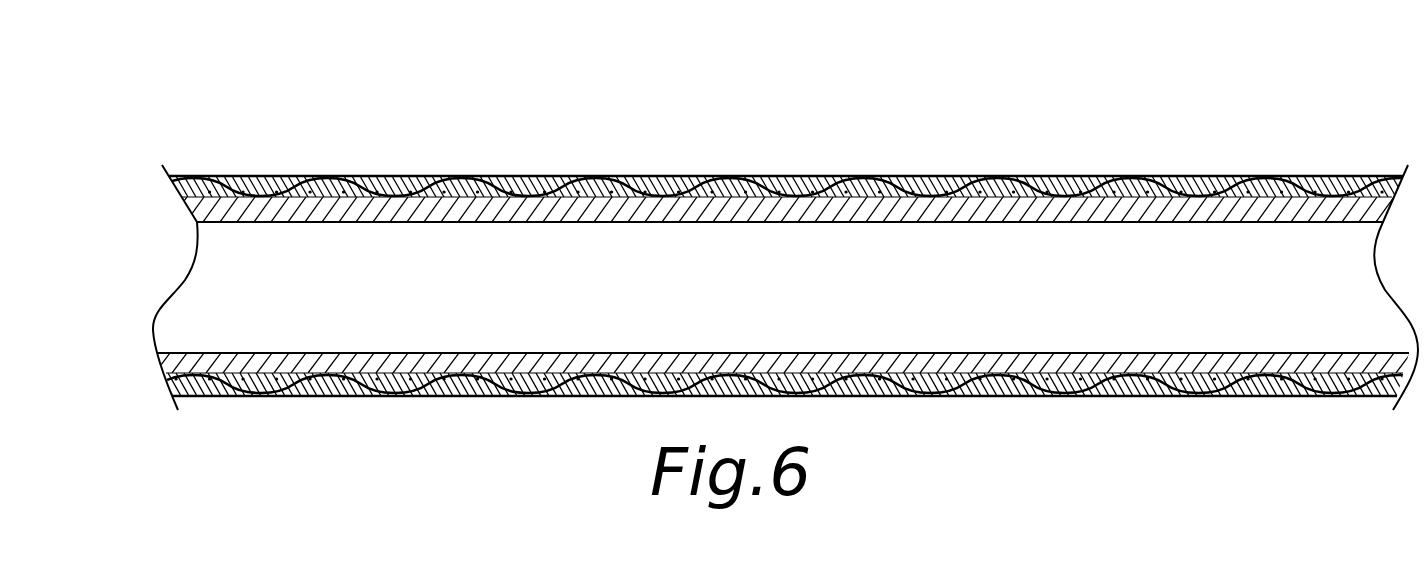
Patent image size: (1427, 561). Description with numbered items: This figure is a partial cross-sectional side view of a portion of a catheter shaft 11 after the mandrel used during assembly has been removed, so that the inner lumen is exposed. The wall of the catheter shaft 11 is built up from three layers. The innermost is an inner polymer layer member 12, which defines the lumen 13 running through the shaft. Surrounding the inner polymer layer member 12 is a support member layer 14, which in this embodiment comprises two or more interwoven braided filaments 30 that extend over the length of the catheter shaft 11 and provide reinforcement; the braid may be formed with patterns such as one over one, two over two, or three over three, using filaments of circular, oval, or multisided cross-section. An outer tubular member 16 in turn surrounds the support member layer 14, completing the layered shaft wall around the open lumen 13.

The catheter shaft 11 is at (386, 132).
The inner polymer layer member 12 is at (222, 222).
The lumen 13 is at (247, 302).
The support member layer 14 is at (1034, 182).
The outer tubular member 16 is at (1170, 180).
The braided filaments 30 is at (872, 182).